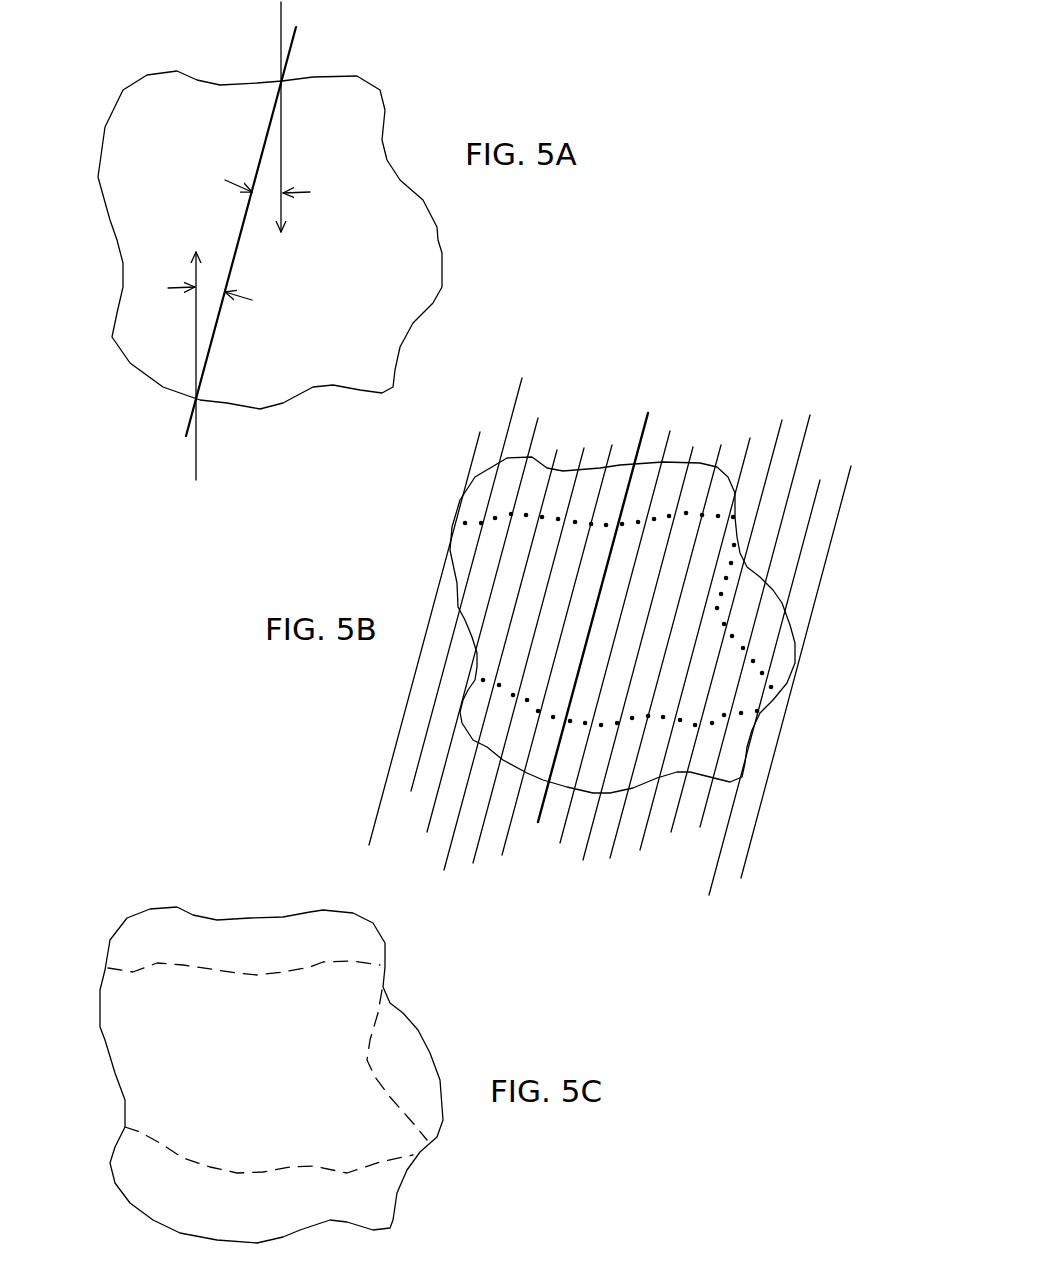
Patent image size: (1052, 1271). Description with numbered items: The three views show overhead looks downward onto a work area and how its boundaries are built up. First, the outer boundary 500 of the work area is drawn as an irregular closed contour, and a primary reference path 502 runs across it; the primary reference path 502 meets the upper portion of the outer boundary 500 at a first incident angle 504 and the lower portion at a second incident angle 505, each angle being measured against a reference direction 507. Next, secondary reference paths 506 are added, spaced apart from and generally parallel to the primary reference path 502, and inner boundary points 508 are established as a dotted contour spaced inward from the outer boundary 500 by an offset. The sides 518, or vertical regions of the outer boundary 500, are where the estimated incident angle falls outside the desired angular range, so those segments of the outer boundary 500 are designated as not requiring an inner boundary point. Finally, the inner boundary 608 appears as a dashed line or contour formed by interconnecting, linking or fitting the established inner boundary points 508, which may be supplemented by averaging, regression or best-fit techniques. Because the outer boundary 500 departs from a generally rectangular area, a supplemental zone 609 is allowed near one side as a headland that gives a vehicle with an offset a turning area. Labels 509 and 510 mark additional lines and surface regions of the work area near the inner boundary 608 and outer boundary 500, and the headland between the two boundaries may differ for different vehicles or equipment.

In FIG. 5A, the outer boundary 500 is at (383, 107).
In FIG. 5B, the outer boundary 500 is at (702, 467).
In FIG. 5C, the outer boundary 500 is at (277, 918).
In FIG. 5A, the primary reference path 502 is at (293, 52).
In FIG. 5B, the primary reference path 502 is at (643, 425).
In FIG. 5A, the first incident angle 504 is at (258, 222).
In FIG. 5A, the second incident angle 505 is at (215, 257).
In FIG. 5B, the secondary reference paths 506 is at (802, 440).
In FIG. 5A, the first reference direction 507 is at (280, 23).
In FIG. 5B, the inner boundary points 508 is at (496, 518).
In FIG. 5C, the region boundary line 509 is at (182, 1152).
In FIG. 5C, the surface layer 510 is at (204, 952).
In FIG. 5B, the sides 518 is at (432, 610).
In FIG. 5C, the sides 518 is at (110, 1050).
In FIG. 5C, the inner boundary 608 is at (367, 1058).
In FIG. 5C, the supplemental zone 609 is at (407, 1058).